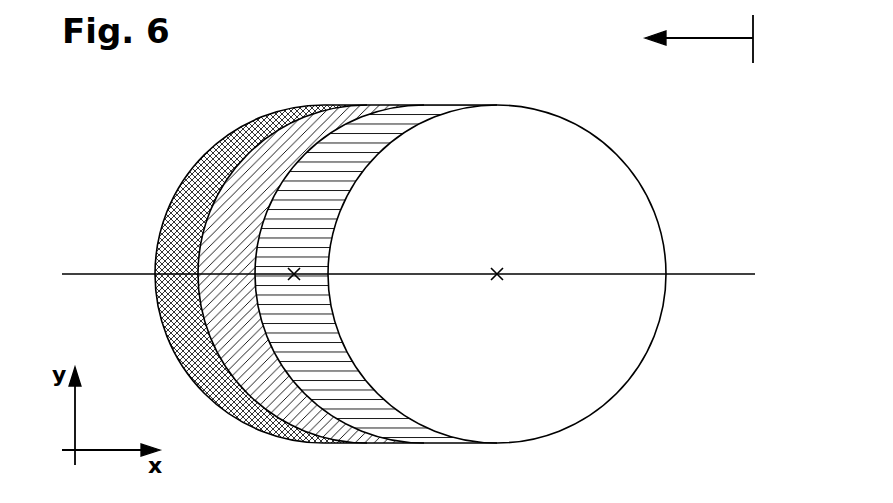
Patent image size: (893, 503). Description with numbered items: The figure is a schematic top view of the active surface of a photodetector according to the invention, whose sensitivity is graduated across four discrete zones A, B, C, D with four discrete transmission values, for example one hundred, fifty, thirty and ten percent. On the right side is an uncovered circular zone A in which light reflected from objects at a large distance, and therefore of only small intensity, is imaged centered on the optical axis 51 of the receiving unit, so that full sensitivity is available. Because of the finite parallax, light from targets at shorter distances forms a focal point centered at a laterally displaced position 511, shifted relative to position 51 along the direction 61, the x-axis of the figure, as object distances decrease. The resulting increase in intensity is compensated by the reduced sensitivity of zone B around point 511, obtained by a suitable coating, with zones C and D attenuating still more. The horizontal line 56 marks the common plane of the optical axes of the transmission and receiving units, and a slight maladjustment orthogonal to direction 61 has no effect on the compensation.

The optical axis of the receiving unit 51 is at (505, 271).
The laterally displaced position 511 is at (294, 271).
The common plane of the optical axes 56 is at (717, 274).
The direction of displacement 61 is at (699, 39).
The zone A is at (497, 127).
The zone B is at (400, 130).
The zone C is at (345, 122).
The zone D is at (270, 127).